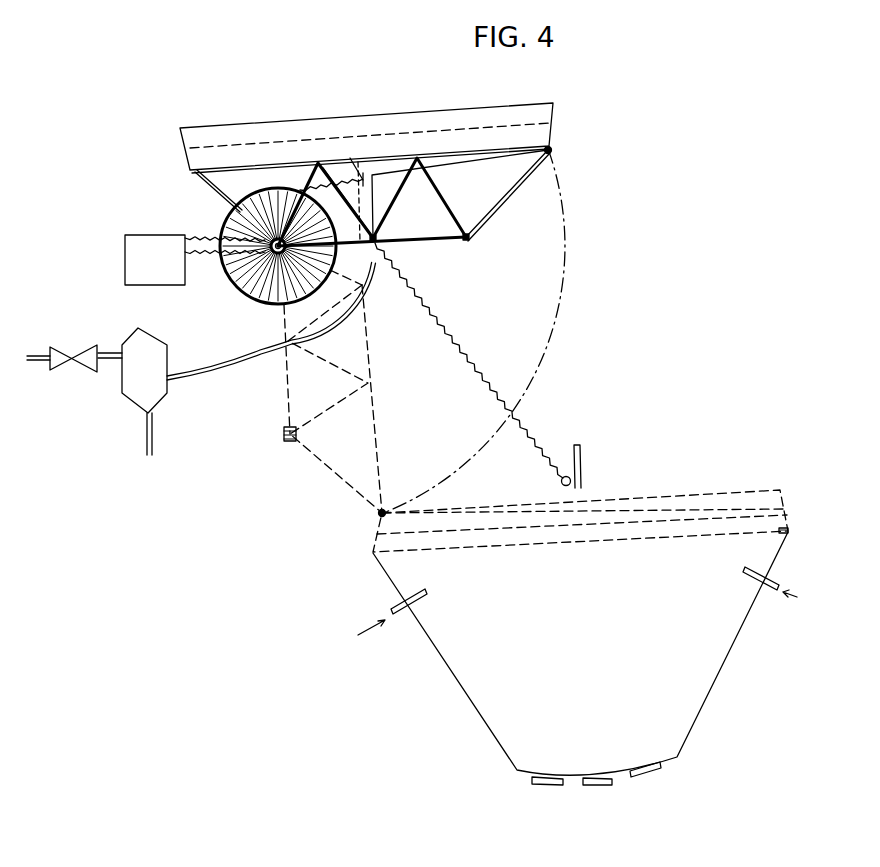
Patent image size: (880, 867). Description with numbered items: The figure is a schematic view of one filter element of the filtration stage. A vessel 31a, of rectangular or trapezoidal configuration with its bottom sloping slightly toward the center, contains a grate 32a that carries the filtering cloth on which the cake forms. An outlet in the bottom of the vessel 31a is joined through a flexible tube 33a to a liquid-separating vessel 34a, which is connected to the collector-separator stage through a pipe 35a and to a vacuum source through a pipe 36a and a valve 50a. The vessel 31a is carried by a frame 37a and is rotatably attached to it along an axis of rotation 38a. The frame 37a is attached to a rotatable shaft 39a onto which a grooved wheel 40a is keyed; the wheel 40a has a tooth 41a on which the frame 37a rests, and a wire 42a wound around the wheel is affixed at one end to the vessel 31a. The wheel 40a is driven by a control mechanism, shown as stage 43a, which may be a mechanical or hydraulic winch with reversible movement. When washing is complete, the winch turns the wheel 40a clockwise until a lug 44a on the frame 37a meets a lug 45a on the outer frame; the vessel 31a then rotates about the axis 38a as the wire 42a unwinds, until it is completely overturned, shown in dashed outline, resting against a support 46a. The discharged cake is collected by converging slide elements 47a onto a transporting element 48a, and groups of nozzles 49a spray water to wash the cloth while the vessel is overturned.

The vessel 31a is at (542, 106).
The grate 32a is at (395, 135).
The flexible tube 33a is at (201, 366).
The liquid-separating vessel 34a is at (161, 336).
The pipe 35a is at (146, 437).
The pipe 36a is at (104, 340).
The frame 37a is at (493, 203).
The axis of rotation 38a is at (551, 152).
The rotatable shaft 39a is at (228, 280).
The grooved wheel 40a is at (284, 318).
The tooth 41a is at (357, 253).
The wire 42a is at (528, 417).
The control mechanism stage 43a is at (168, 271).
The lug 44a is at (467, 240).
The lug 45a is at (293, 442).
The support 46a is at (784, 546).
The converging slide elements 47a is at (464, 688).
The transporting element 48a is at (640, 778).
The nozzles 49a is at (769, 590).
The valve 50a is at (71, 368).